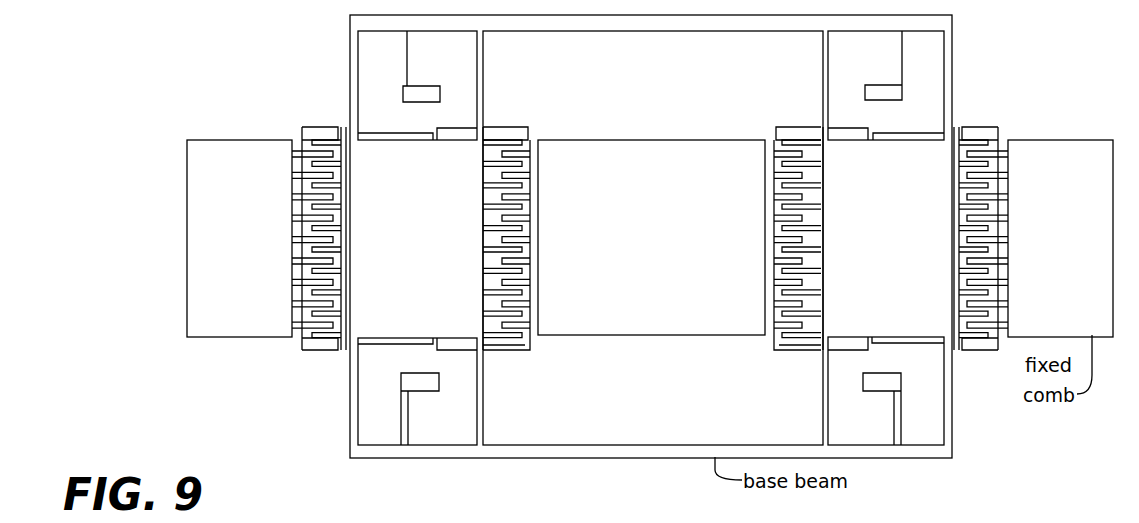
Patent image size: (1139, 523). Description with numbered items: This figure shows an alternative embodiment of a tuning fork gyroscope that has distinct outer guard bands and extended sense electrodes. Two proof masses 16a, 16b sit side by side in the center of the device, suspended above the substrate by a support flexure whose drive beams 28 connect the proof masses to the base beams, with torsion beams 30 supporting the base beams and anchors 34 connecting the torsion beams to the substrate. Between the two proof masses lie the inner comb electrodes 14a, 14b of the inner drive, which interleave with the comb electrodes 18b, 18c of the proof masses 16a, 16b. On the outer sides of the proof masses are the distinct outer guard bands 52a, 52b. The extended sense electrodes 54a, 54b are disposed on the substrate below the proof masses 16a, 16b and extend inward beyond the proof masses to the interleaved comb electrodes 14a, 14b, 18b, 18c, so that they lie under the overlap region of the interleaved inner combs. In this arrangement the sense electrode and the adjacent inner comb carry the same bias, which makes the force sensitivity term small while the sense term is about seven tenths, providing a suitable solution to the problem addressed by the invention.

The drive beam 28 is at (483, 75).
The torsion beam 30 is at (407, 58).
The anchor 34 is at (431, 388).
The outer guard band 52a is at (313, 351).
The outer guard band 52b is at (978, 127).
The proof mass 16a is at (435, 285).
The proof mass 16b is at (902, 283).
The extended sense electrode 54a is at (512, 350).
The extended sense electrode 54b is at (786, 350).
The comb electrode 18b is at (492, 143).
The comb electrode 18c is at (805, 143).
The comb electrode 14a is at (533, 143).
The comb electrode 14b is at (769, 150).